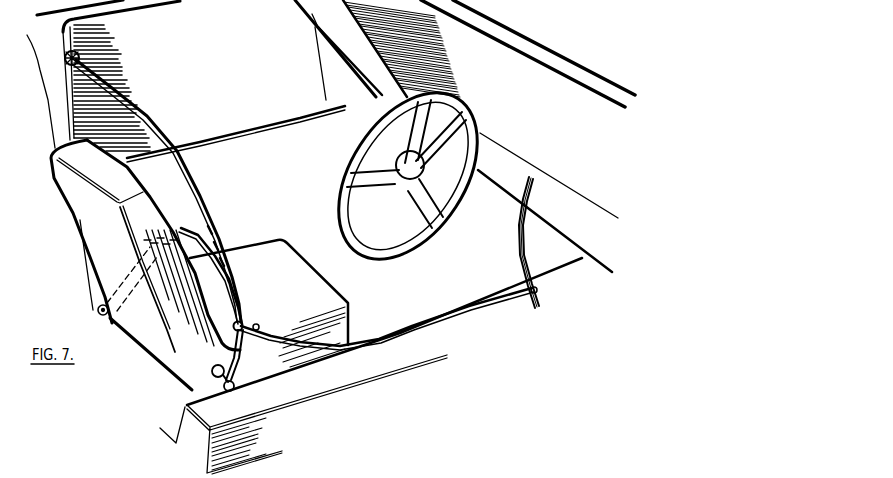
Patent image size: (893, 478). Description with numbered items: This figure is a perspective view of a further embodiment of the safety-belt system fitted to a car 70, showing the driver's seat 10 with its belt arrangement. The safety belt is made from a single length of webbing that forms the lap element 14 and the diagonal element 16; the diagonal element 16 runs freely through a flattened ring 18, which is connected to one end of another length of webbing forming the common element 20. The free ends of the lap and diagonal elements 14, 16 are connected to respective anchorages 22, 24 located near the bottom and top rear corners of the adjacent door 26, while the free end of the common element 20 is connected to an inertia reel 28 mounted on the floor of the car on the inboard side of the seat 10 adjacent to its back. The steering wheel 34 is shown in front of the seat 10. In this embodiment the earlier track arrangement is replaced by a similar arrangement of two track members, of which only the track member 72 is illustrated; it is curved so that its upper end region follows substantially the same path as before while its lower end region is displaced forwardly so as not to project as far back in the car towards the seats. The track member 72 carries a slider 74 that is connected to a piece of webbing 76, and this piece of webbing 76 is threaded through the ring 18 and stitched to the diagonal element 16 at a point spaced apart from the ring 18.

The driver's seat 10 is at (82, 217).
The lap element 14 is at (187, 233).
The diagonal element 16 is at (157, 138).
The flattened ring 18 is at (258, 323).
The common element 20 is at (243, 350).
The anchorage 22 is at (99, 312).
The anchorage 24 is at (66, 60).
The door 26 is at (253, 150).
The inertia reel 28 is at (228, 386).
The steering wheel 34 is at (480, 124).
The car 70 is at (527, 34).
The track member 72 is at (523, 240).
The slider 74 is at (540, 288).
The piece of webbing 76 is at (413, 327).